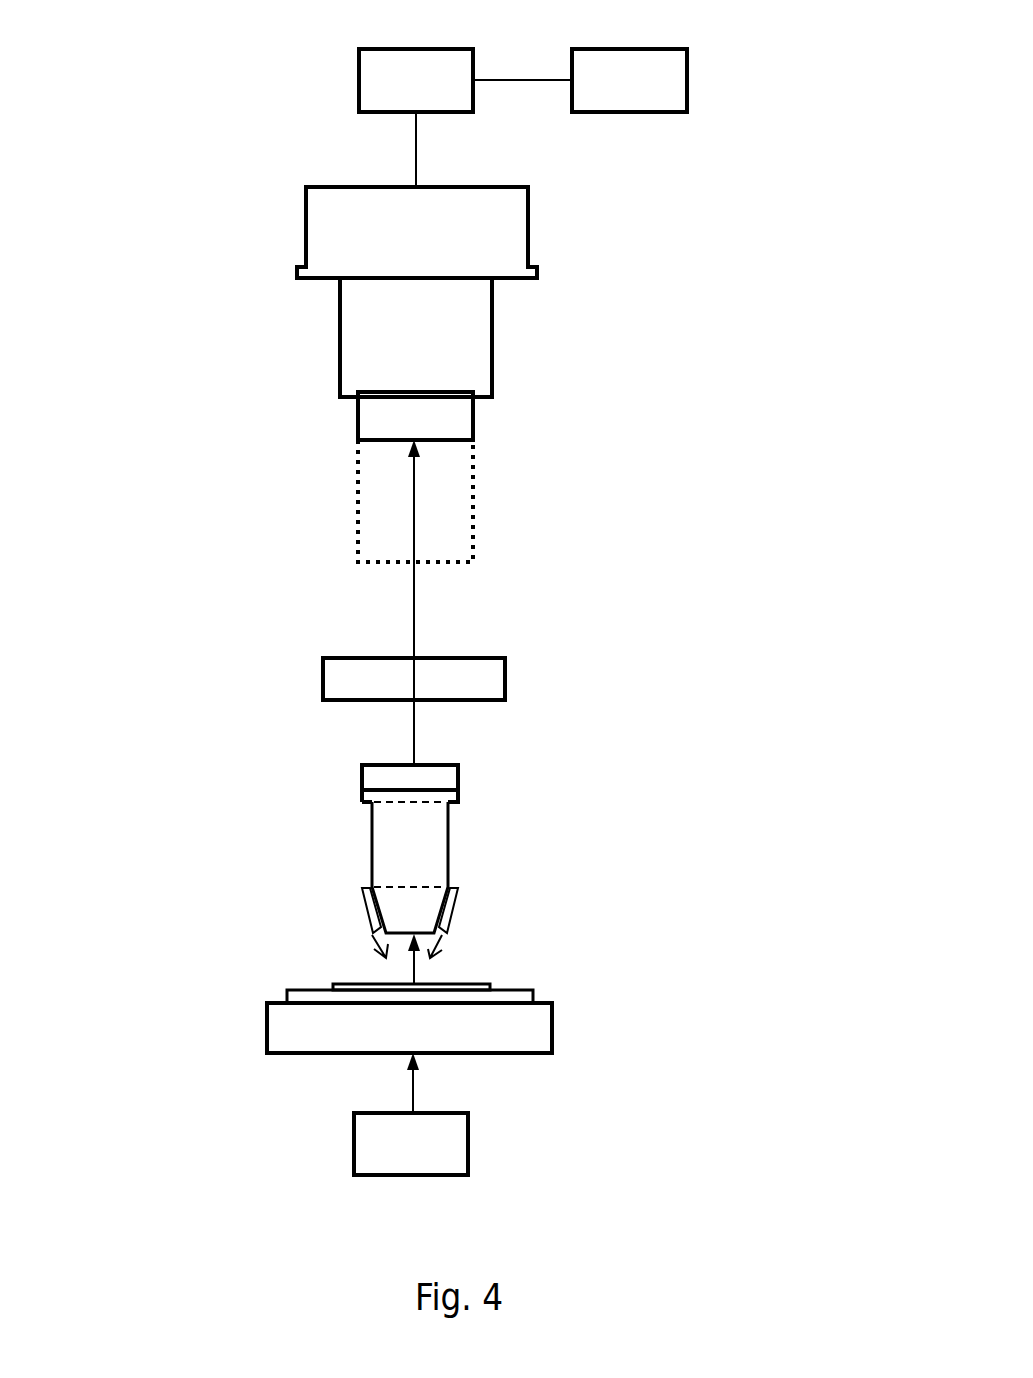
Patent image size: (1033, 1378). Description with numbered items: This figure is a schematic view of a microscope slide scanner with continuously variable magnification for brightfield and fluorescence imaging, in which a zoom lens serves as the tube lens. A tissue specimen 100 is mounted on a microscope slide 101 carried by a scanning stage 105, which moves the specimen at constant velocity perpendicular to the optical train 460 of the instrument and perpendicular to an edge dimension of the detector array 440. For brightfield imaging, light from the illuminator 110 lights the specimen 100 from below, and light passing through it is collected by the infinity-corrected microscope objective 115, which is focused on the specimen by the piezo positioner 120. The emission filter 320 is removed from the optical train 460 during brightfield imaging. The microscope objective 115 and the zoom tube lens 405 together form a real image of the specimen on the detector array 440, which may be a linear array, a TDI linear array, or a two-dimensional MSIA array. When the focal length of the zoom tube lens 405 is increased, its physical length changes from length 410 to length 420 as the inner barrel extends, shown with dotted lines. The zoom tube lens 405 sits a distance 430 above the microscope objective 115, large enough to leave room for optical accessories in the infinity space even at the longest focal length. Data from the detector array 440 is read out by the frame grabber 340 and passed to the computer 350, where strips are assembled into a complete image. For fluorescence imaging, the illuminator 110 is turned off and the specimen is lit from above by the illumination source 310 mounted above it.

The tissue specimen 100 is at (490, 988).
The microscope slide 101 is at (533, 1002).
The scanning stage 105 is at (552, 1028).
The illuminator 110 is at (468, 1151).
The infinity-corrected microscope objective 115 is at (448, 845).
The piezo positioner 120 is at (458, 775).
The illumination source 310 is at (453, 913).
The emission filter 320 is at (505, 680).
The frame grabber 340 is at (359, 80).
The computer 350 is at (687, 80).
The zoom tube lens 405 is at (473, 422).
The length 410 is at (490, 282).
The length 420 is at (333, 285).
The distance 430 is at (333, 563).
The detector array 440 is at (528, 223).
The optical train 460 is at (173, 192).